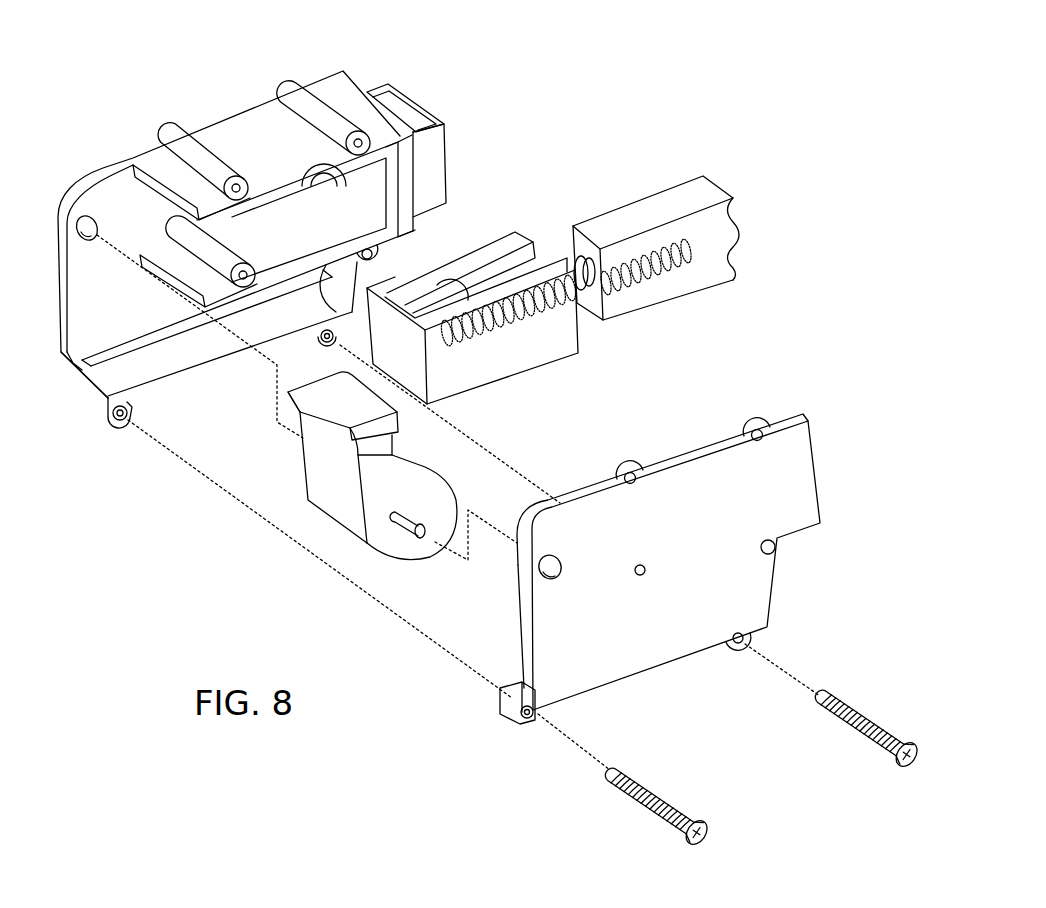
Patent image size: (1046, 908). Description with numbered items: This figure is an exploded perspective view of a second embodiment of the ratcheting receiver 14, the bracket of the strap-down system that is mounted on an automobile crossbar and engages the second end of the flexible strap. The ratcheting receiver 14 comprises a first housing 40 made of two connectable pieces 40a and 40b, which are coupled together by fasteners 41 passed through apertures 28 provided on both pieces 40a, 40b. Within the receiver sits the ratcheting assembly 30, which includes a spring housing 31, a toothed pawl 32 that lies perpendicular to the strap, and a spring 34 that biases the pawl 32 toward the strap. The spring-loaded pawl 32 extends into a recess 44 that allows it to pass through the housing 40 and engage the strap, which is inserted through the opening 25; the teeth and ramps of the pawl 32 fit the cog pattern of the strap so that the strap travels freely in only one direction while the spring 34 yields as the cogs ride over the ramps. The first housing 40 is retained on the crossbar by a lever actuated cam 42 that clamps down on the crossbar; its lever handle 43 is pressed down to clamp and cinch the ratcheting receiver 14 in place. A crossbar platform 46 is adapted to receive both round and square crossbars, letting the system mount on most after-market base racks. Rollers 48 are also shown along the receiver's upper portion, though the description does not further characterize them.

The ratcheting receiver 14 is at (522, 130).
The opening 25 is at (383, 92).
The apertures 28 is at (122, 424).
The ratcheting assembly 30 is at (478, 232).
The spring housing 31 is at (495, 355).
The toothed pawl 32 is at (606, 207).
The spring 34 is at (525, 322).
The first housing 40 is at (75, 296).
The connectable housing piece 40a is at (92, 392).
The connectable housing piece 40b is at (503, 714).
The fasteners 41 is at (675, 805).
The lever actuated cam 42 is at (330, 510).
The lever handle 43 is at (320, 405).
The recess 44 is at (443, 115).
The crossbar platform 46 is at (195, 357).
The roller 48 is at (275, 82).